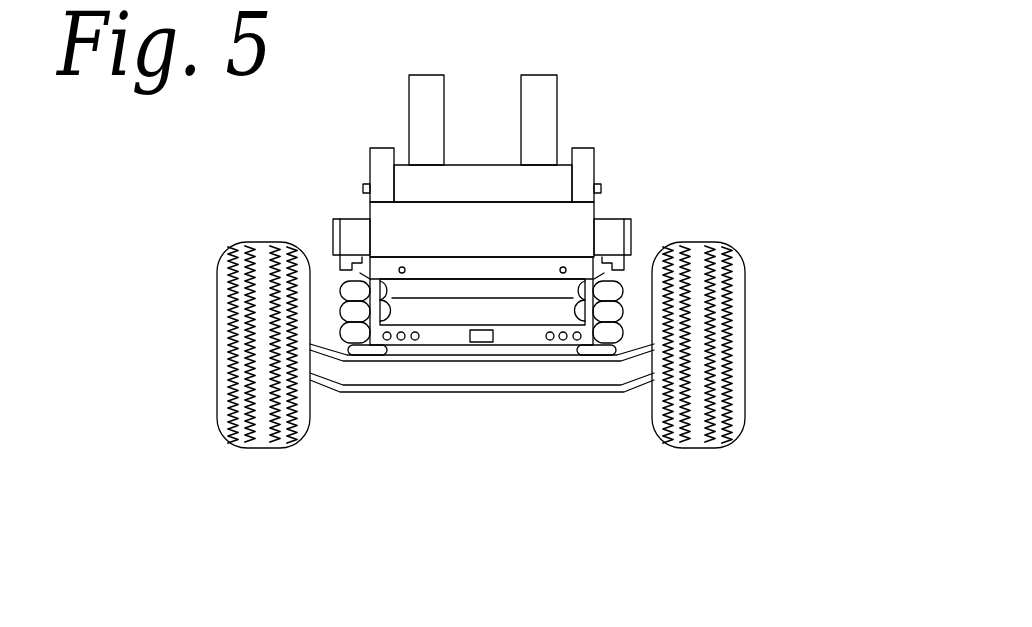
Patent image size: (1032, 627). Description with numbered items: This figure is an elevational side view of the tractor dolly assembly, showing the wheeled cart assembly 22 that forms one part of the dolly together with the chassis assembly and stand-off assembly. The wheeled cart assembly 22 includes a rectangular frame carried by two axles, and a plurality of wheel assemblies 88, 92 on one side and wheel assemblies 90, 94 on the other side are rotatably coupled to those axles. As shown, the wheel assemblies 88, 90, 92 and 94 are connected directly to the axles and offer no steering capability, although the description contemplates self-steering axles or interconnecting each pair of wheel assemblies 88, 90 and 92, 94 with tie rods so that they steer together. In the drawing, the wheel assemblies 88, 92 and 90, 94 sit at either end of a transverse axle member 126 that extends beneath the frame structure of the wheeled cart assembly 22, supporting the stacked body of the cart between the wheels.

The wheeled cart assembly 22 is at (700, 160).
The wheel assembly 88 is at (171, 309).
The wheel assembly 92 is at (170, 271).
The wheel assembly 90 is at (784, 290).
The wheel assembly 94 is at (775, 233).
The axle beam 126 is at (450, 332).